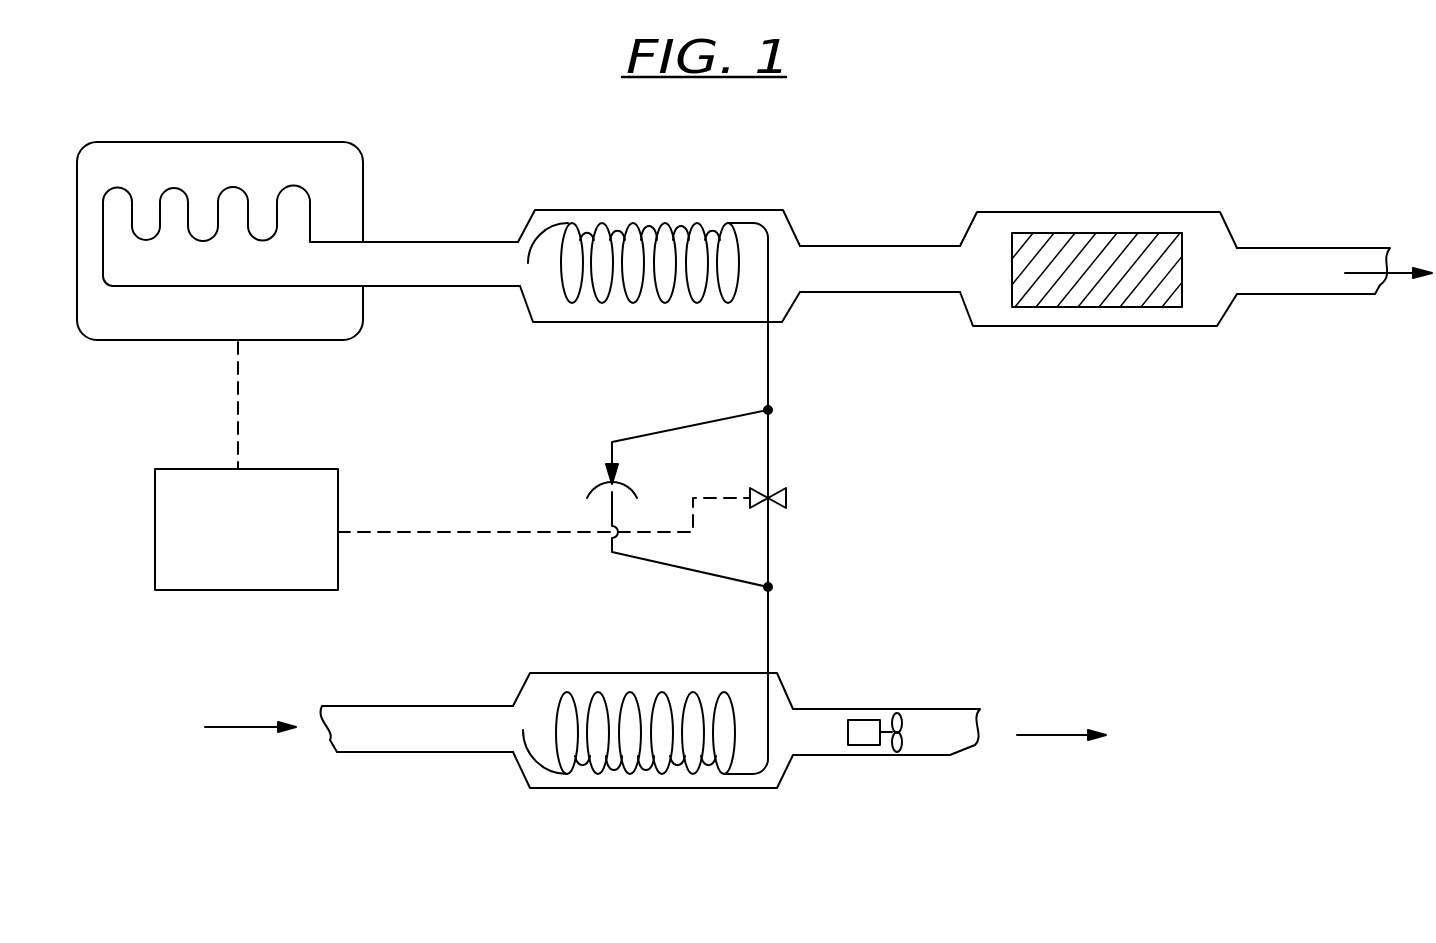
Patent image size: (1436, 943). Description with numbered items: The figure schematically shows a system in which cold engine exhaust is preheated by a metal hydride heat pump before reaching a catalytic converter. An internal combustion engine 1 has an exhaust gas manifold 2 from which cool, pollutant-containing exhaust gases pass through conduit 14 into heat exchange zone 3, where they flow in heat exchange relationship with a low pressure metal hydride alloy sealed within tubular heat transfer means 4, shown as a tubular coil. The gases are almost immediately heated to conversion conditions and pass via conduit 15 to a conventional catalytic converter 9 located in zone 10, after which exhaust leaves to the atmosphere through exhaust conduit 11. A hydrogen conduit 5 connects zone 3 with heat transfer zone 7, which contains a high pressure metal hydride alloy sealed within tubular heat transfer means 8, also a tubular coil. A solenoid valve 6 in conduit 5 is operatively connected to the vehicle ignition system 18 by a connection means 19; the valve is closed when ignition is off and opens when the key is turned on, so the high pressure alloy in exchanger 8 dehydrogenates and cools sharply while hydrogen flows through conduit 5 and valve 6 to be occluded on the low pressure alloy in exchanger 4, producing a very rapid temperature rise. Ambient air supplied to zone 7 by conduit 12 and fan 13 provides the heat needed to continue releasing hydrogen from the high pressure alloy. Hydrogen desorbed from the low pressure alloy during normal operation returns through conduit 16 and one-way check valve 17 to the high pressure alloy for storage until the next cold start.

The internal combustion engine 1 is at (315, 155).
The exhaust gas manifold 2 is at (147, 278).
The heat exchange zone 3 is at (668, 216).
The tubular heat transfer means 4 is at (565, 297).
The hydrogen conduit 5 is at (770, 457).
The solenoid valve 6 is at (787, 500).
The heat transfer zone 7 is at (627, 783).
The tubular heat transfer means 8 is at (555, 705).
The catalytic converter 9 is at (1115, 233).
The catalytic conversion zone 10 is at (1163, 323).
The exhaust conduit 11 is at (1302, 257).
The conduit 12 is at (406, 705).
The fan 13 is at (863, 722).
The conduit 14 is at (433, 252).
The conduit 15 is at (887, 252).
The conduit 16 is at (688, 425).
The one-way valve means 17 is at (597, 484).
The vehicle ignition system 18 is at (188, 590).
The connection means 19 is at (437, 532).